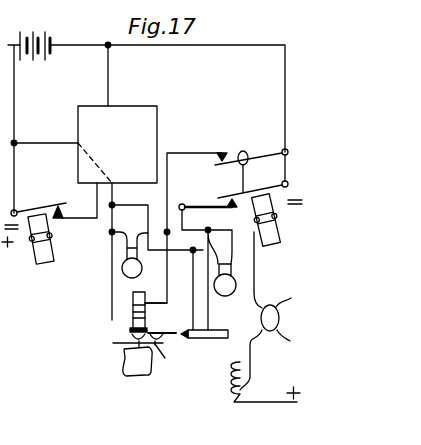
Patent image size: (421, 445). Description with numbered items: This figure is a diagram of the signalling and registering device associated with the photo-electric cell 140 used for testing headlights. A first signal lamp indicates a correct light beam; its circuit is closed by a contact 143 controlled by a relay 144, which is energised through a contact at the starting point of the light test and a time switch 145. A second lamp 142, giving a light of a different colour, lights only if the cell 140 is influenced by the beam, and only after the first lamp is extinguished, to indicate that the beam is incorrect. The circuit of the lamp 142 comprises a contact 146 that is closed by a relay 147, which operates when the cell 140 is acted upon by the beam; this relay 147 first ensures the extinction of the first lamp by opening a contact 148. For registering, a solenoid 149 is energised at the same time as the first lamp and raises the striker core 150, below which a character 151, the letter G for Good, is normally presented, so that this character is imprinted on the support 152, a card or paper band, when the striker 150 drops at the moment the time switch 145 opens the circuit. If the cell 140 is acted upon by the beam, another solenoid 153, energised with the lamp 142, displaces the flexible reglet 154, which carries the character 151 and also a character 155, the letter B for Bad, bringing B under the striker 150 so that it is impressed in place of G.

The photo-electric cell 140 is at (261, 318).
The lamp 142 is at (229, 284).
The contact 143 is at (68, 204).
The relay 144 is at (41, 264).
The time switch 145 is at (117, 144).
The contact 146 is at (235, 193).
The relay 147 is at (122, 270).
The contact 148 is at (229, 152).
The solenoid 149 is at (133, 313).
The striker core 150 is at (131, 328).
The character 151 is at (126, 352).
The support 152 is at (113, 344).
The solenoid 153 is at (197, 339).
The flexible reglet 154 is at (152, 333).
The character 155 is at (165, 358).